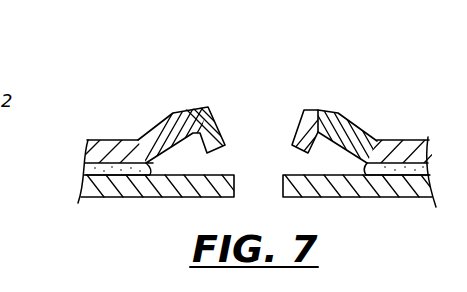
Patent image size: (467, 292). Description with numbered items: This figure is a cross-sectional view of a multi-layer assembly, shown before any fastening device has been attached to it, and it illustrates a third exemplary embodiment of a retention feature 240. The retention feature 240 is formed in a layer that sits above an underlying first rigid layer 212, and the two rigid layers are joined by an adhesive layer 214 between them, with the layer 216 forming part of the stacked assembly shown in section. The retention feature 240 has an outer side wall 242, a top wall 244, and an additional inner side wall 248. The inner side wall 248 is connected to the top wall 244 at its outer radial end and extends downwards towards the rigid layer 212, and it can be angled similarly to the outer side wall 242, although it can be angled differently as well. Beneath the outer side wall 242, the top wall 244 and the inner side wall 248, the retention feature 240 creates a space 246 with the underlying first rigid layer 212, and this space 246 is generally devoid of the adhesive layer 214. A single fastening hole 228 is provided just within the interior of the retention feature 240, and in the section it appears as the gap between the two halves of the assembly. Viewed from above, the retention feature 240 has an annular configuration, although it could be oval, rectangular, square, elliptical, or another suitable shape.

The first rigid layer 212 is at (132, 192).
The adhesive layer 214 is at (97, 169).
The first cover layer 216 is at (121, 155).
The fastening hole 228 is at (274, 168).
The retention feature 240 is at (156, 115).
The outer side wall 242 is at (352, 133).
The top wall 244 is at (337, 116).
The space 246 is at (340, 170).
The inner side wall 248 is at (305, 128).